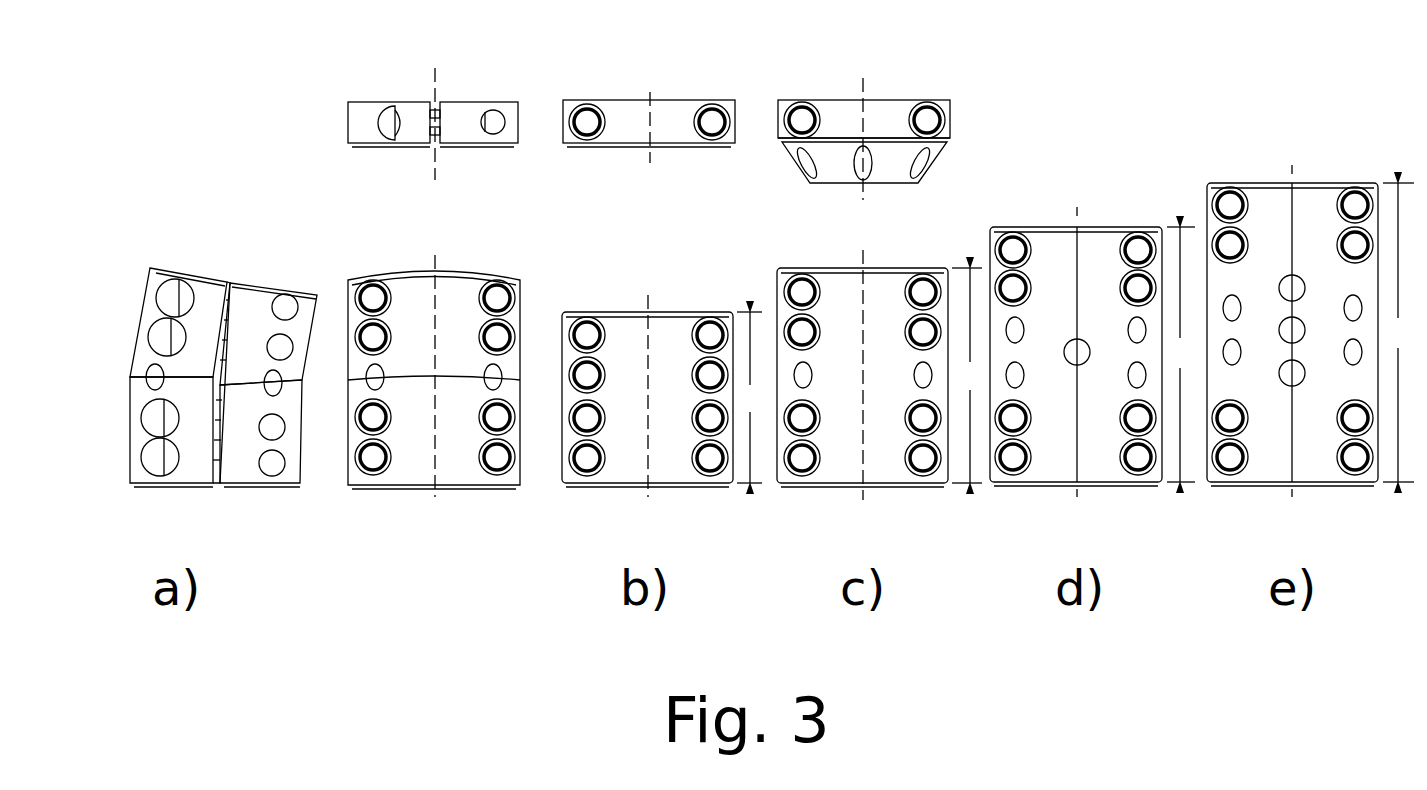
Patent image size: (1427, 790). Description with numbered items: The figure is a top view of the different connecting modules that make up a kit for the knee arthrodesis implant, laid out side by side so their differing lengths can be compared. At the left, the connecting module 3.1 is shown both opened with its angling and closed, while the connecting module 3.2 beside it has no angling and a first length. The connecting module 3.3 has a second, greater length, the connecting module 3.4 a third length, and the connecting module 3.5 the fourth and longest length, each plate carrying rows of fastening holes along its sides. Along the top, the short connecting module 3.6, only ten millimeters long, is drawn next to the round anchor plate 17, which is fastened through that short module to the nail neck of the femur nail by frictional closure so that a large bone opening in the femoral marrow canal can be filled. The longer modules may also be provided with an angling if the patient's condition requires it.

The connecting module 3.1 is at (325, 337).
The connecting module 3.2 is at (665, 360).
The connecting module 3.3 is at (879, 353).
The connecting module 3.4 is at (1093, 300).
The connecting module 3.5 is at (1317, 292).
The connecting module 3.6 is at (541, 94).
The round anchor plate 17 is at (890, 103).